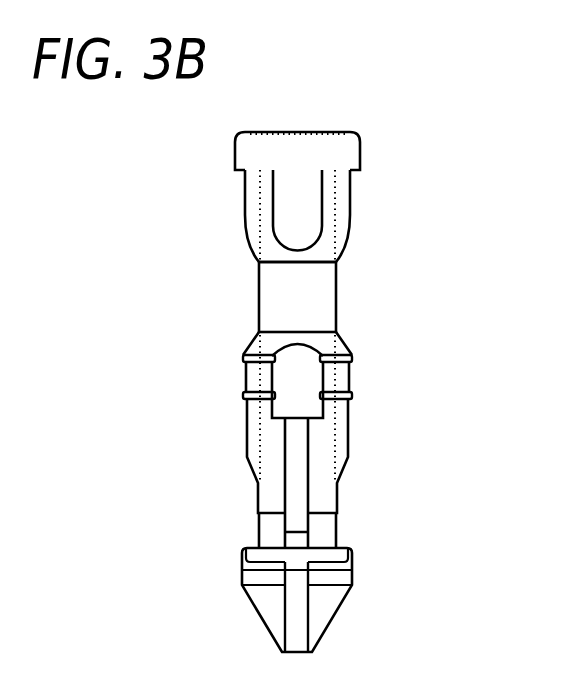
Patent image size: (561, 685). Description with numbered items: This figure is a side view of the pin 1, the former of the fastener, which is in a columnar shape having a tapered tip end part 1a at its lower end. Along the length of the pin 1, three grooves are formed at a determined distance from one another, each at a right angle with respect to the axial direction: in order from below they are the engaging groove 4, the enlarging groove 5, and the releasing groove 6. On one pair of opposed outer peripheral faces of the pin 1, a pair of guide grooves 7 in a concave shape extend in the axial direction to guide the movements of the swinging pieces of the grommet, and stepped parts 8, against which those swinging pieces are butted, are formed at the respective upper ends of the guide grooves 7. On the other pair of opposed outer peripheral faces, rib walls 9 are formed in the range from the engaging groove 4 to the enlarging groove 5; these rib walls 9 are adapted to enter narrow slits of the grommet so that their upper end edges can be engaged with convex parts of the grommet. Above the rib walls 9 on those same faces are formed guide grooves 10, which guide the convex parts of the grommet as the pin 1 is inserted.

The pin 1 is at (418, 293).
The tip end part 1a is at (332, 580).
The engaging groove 4 is at (272, 527).
The enlarging groove 5 is at (243, 375).
The releasing groove 6 is at (269, 289).
The guide grooves 7 is at (340, 223).
The stepped parts 8 is at (342, 170).
The rib walls 9 is at (300, 441).
The guide grooves 10 is at (292, 186).